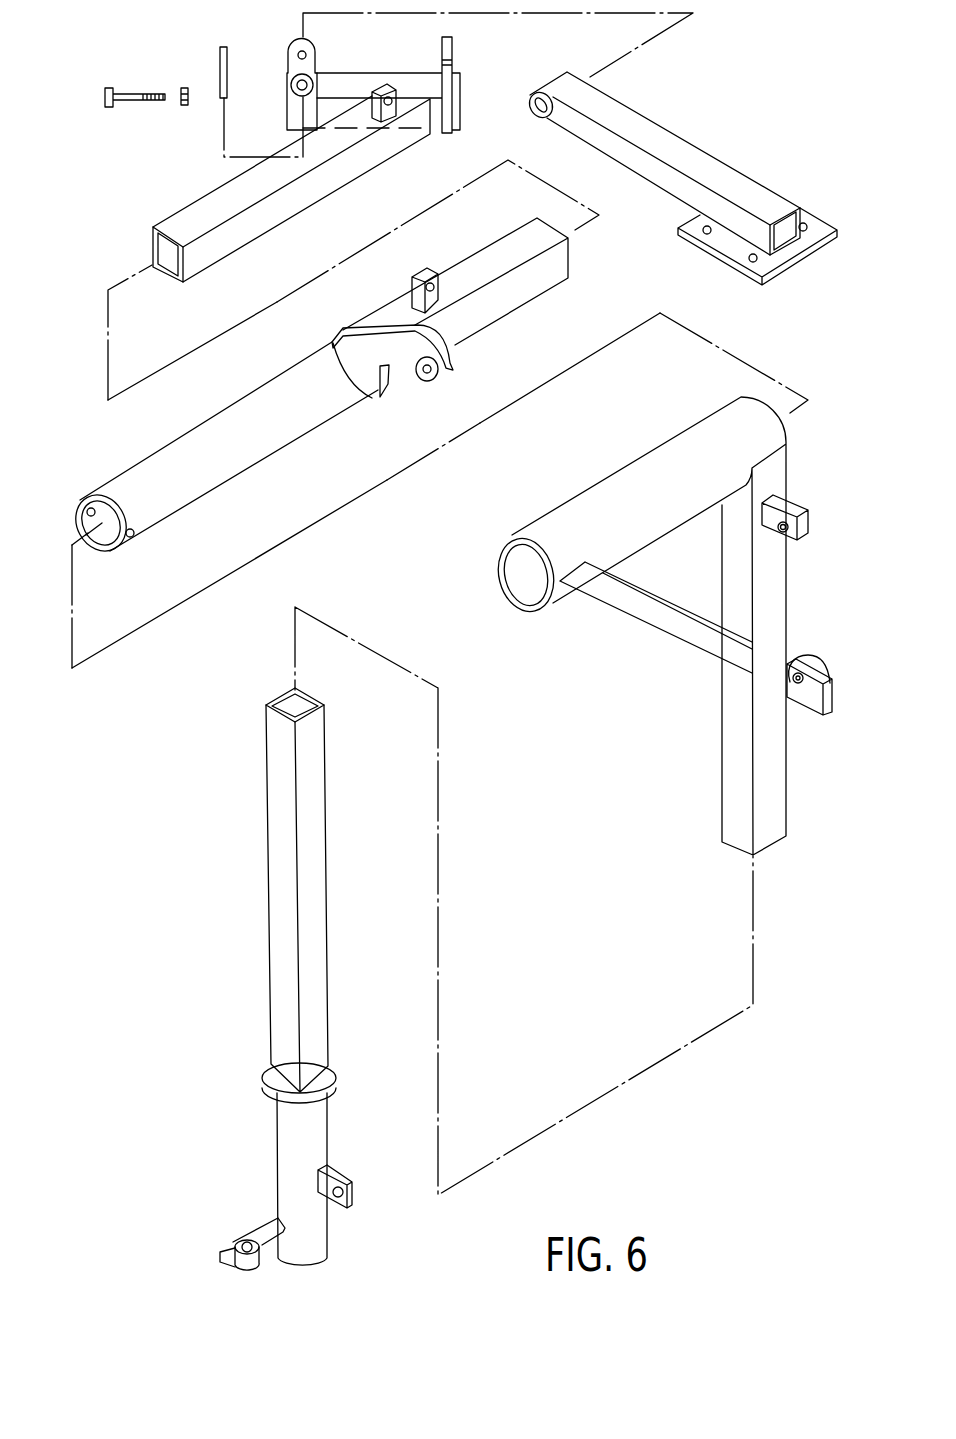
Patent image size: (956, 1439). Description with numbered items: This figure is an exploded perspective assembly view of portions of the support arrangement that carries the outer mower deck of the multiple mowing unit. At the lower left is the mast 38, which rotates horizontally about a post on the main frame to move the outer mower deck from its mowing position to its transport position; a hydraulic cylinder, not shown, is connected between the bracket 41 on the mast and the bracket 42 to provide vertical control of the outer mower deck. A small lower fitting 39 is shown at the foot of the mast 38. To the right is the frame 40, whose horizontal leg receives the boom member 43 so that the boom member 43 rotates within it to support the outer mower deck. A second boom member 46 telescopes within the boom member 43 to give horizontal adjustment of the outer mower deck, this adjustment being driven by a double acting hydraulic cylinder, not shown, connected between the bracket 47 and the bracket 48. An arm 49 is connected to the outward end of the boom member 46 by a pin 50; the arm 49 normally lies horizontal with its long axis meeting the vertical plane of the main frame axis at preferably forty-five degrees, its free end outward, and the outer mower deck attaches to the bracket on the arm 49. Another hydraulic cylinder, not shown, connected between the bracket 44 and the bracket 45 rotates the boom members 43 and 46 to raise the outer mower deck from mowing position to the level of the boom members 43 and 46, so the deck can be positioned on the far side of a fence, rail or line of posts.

The mast 38 is at (277, 1133).
The lower bracket 39 is at (243, 1237).
The frame 40 is at (652, 511).
The bracket 41 is at (347, 1178).
The bracket 42 is at (808, 525).
The boom member 43 is at (239, 458).
The bracket 44 is at (447, 367).
The bracket 45 is at (820, 659).
The boom member 46 is at (263, 220).
The bracket 47 is at (415, 272).
The bracket 48 is at (377, 85).
The arm 49 is at (716, 133).
The pin 50 is at (218, 55).